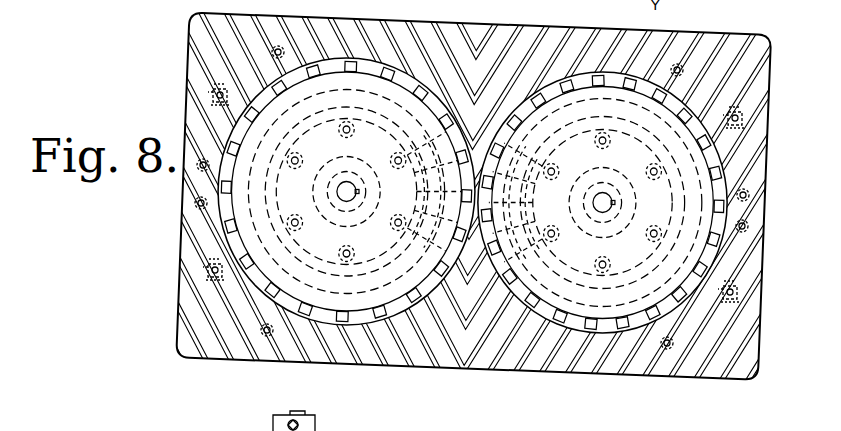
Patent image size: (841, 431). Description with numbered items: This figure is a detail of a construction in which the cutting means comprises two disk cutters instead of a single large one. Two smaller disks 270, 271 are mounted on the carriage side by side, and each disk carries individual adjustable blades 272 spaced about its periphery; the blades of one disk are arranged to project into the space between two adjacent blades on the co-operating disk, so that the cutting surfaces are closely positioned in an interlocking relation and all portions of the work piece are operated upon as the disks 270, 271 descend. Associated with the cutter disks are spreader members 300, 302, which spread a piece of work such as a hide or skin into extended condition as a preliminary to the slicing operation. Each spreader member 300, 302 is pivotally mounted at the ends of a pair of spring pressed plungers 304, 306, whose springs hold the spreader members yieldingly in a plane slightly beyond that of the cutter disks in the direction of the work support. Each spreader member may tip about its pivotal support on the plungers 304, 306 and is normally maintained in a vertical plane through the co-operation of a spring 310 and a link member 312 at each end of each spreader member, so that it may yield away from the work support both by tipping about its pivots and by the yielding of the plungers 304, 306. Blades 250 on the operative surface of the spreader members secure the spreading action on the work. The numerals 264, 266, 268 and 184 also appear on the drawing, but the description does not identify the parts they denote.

The spreader member 300 is at (207, 38).
The spreader member 302 is at (198, 317).
The spring pressed plunger 304 is at (740, 116).
The spring pressed plunger 306 is at (215, 95).
The spring 310 is at (197, 203).
The link member 312 is at (199, 163).
The disk 270 is at (335, 305).
The disk 271 is at (563, 312).
The adjustable blade 272 is at (387, 318).
The blade 250 is at (480, 360).
The guide rings 264 is at (474, 153).
The bolts 266 is at (474, 136).
The hub 268 is at (474, 119).
The connector 184 is at (297, 415).